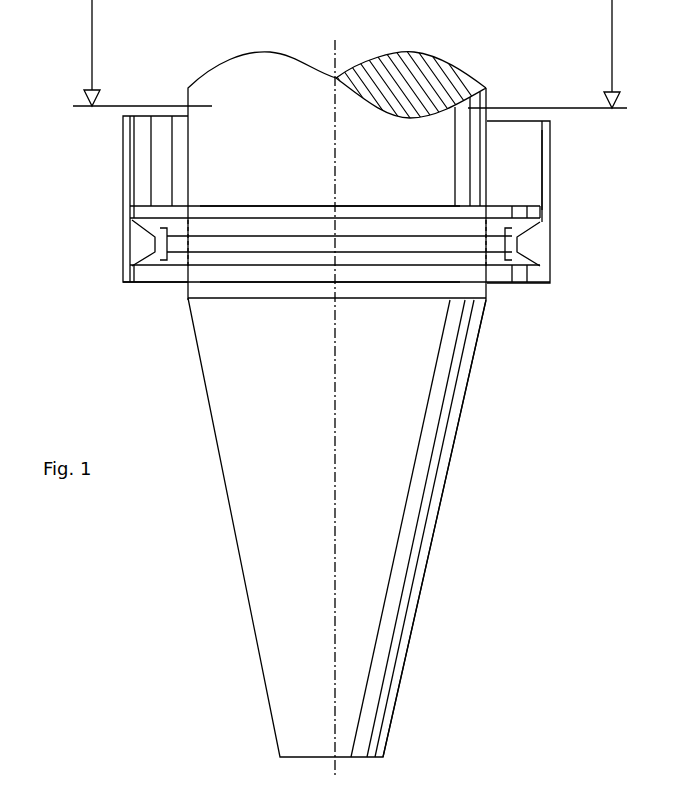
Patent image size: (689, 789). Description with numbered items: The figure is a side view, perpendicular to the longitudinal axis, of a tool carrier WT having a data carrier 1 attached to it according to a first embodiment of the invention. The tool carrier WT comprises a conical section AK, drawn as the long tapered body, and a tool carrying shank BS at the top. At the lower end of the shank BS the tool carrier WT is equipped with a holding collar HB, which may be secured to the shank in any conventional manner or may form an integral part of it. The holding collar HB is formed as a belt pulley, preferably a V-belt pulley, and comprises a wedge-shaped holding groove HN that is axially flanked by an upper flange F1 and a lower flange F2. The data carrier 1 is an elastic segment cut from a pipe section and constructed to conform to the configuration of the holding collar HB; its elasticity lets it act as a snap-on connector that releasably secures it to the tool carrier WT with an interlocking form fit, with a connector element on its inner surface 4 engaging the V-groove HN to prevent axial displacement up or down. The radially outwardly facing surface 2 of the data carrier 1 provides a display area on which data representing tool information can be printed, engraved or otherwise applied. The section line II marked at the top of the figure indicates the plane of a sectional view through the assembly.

The data carrier 1 is at (557, 220).
The outer surface 2 is at (550, 168).
The inner surface 4 is at (542, 175).
The section line II- II is at (350, 54).
The tool carrying shank BS is at (230, 92).
The holding groove HN is at (263, 242).
The upper flange F1 is at (420, 213).
The lower flange F2 is at (388, 278).
The holding collar HB is at (518, 284).
The tool carrier WT is at (217, 478).
The conical section AK is at (417, 607).